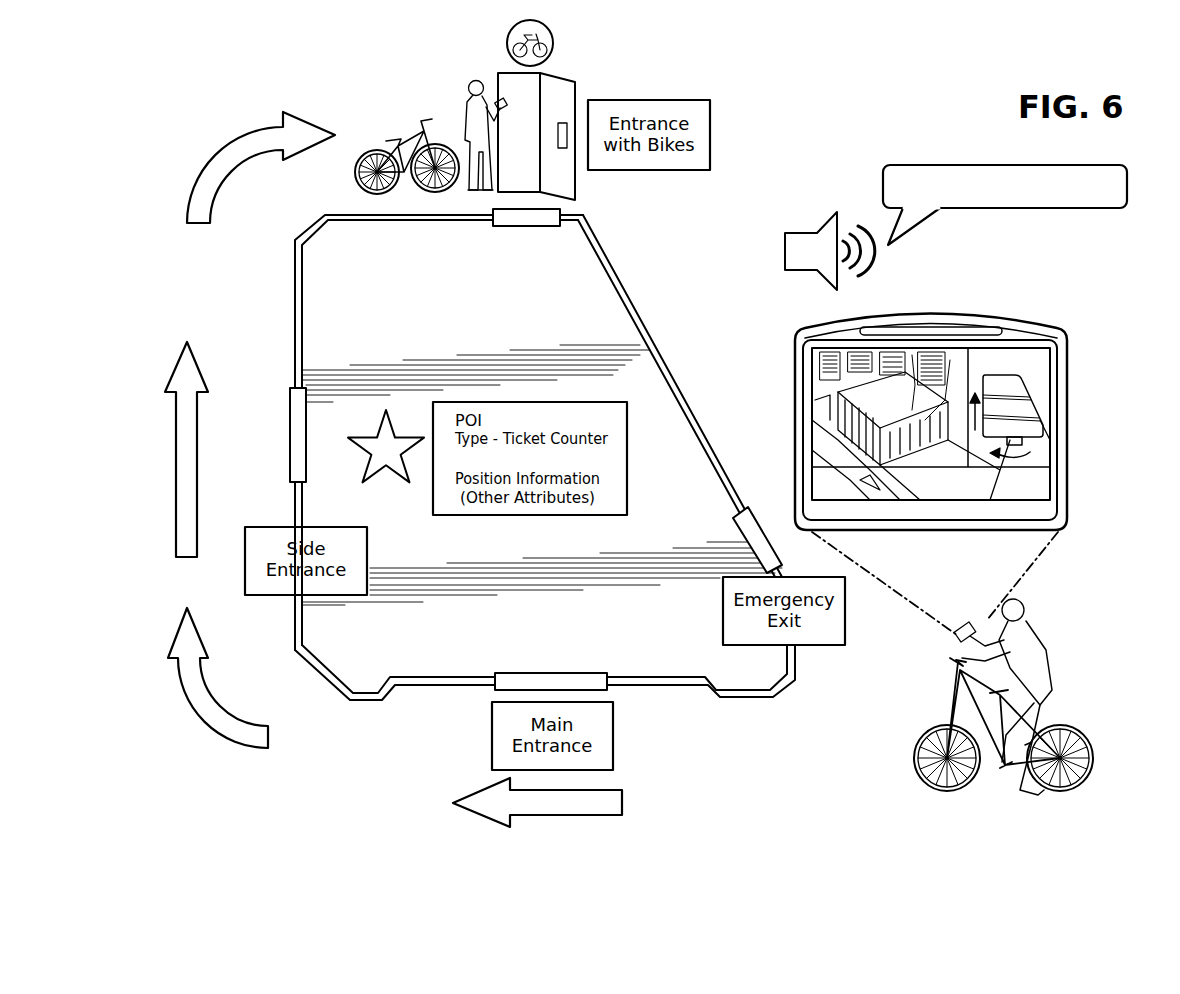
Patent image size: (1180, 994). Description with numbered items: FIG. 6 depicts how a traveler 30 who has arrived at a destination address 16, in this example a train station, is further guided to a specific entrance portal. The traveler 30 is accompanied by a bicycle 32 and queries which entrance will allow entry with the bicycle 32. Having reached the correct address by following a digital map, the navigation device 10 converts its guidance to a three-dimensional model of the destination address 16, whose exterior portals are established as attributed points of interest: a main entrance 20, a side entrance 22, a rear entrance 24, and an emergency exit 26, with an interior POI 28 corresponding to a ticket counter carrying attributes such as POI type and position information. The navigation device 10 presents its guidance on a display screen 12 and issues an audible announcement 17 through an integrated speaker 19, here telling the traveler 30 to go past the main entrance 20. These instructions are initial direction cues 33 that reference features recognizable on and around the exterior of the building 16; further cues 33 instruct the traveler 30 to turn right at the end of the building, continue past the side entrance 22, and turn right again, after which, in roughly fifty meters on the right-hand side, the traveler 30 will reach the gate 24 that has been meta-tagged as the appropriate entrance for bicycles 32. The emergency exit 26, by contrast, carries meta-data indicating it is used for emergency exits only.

The navigation device 10 is at (966, 387).
The display screen 12 is at (1038, 363).
The destination address 16 is at (680, 392).
The audible announcement 17 is at (930, 165).
The speaker 19 is at (800, 233).
The main entrance 20 is at (520, 677).
The side entrance 22 is at (290, 424).
The rear entrance 24 is at (522, 222).
The emergency exit 26 is at (760, 537).
The interior POI 28 is at (375, 459).
The traveler 30 is at (462, 100).
The bicycle 32 is at (392, 136).
The initial direction cues 33 is at (282, 144).